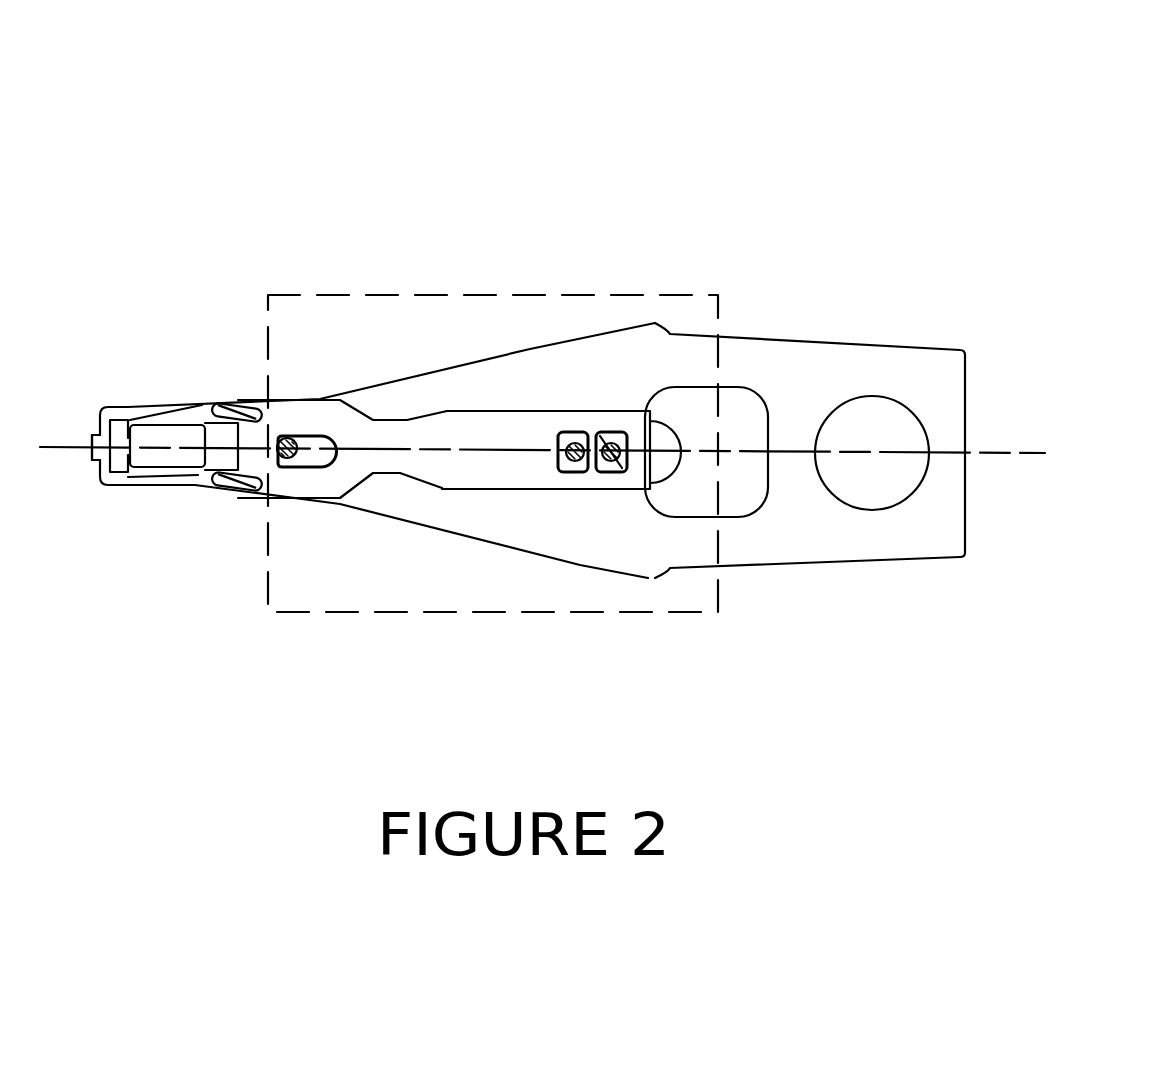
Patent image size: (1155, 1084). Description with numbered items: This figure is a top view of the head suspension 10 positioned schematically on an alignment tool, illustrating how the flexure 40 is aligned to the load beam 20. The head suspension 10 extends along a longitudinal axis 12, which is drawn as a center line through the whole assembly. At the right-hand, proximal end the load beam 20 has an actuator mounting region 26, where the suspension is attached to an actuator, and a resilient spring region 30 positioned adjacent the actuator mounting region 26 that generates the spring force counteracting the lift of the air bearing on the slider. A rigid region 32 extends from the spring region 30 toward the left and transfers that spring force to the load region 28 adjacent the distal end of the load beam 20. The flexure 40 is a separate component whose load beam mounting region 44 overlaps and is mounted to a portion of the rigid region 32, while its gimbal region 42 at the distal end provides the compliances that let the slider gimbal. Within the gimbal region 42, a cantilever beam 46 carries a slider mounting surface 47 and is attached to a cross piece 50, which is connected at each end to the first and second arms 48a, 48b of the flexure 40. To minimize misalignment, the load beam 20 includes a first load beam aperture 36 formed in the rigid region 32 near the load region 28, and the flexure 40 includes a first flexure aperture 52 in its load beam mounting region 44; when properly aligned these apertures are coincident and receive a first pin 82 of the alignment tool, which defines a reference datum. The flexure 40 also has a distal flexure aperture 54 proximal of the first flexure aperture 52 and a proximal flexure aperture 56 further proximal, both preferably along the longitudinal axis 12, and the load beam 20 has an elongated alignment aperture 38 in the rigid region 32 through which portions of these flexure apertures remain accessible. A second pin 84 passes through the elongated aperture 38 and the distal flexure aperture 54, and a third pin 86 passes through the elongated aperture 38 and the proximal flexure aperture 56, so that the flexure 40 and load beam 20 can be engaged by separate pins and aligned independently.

The head suspension 10 is at (808, 292).
The longitudinal axis 12 is at (1020, 453).
The load beam 20 is at (866, 372).
The actuator mounting region 26 is at (907, 540).
The load region 28 is at (215, 463).
The resilient spring region 30 is at (760, 558).
The rigid region 32 is at (560, 537).
The first load beam aperture 36 is at (307, 468).
The elongated alignment aperture 38 is at (617, 470).
The flexure 40 is at (420, 467).
The gimbal region 42 is at (168, 420).
The load beam mounting region 44 is at (500, 428).
The cantilever beam 46 is at (128, 420).
The slider mounting surface 47 is at (167, 446).
The first arm 48a is at (128, 407).
The second arm 48b is at (147, 482).
The cross piece 50 is at (105, 477).
The first flexure aperture 52 is at (323, 436).
The distal flexure aperture 54 is at (580, 467).
The proximal flexure aperture 56 is at (615, 470).
The first pin 82 is at (280, 437).
The second pin 84 is at (573, 432).
The third pin 86 is at (610, 443).